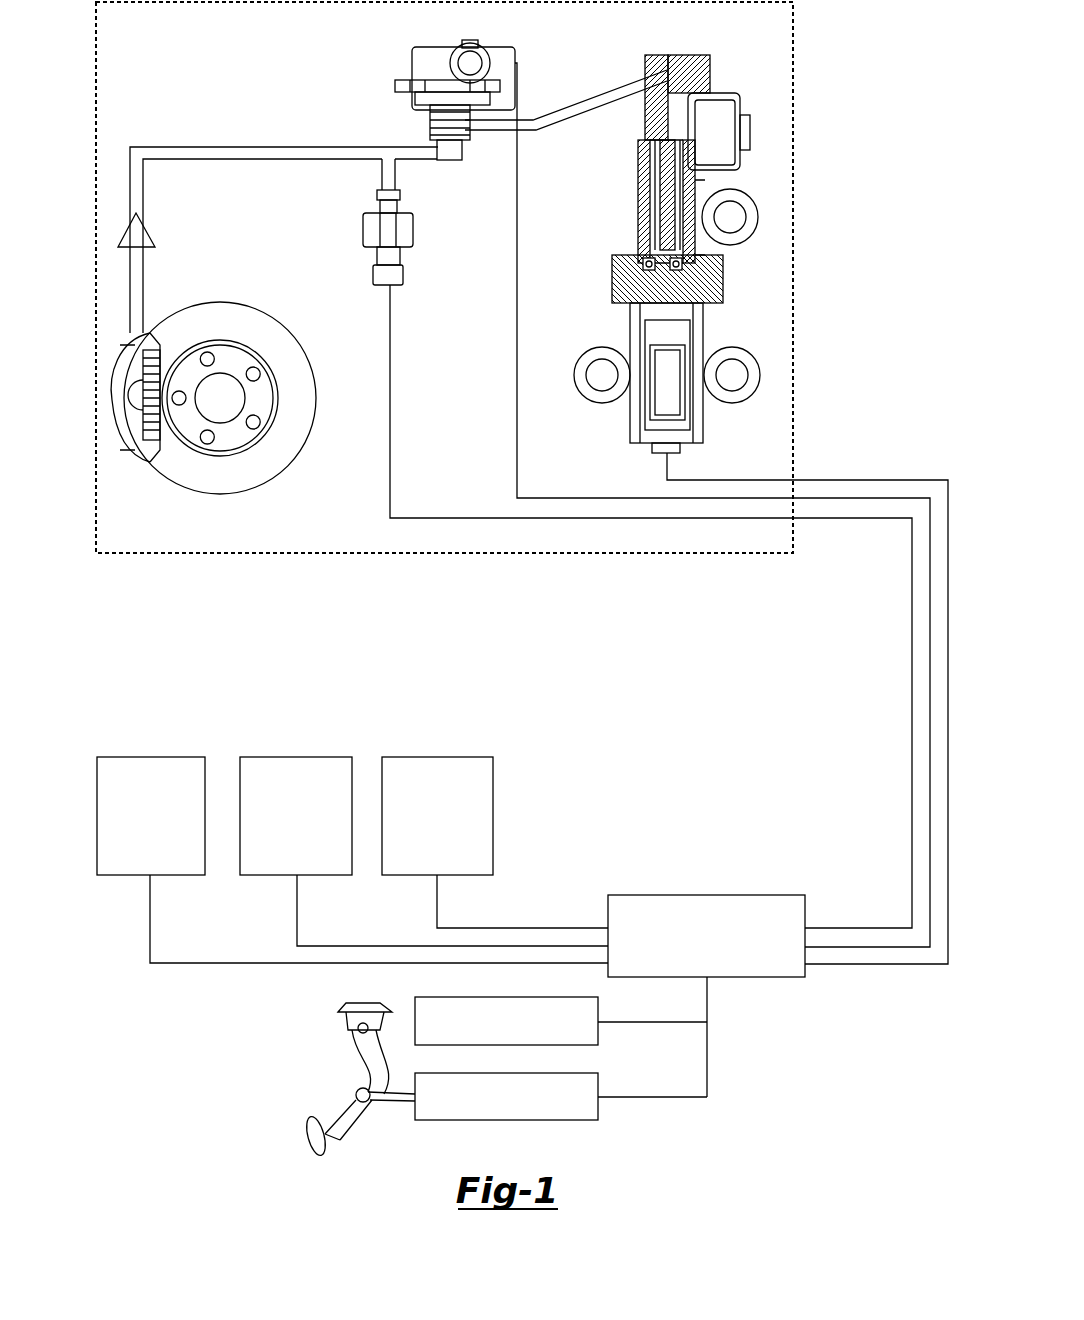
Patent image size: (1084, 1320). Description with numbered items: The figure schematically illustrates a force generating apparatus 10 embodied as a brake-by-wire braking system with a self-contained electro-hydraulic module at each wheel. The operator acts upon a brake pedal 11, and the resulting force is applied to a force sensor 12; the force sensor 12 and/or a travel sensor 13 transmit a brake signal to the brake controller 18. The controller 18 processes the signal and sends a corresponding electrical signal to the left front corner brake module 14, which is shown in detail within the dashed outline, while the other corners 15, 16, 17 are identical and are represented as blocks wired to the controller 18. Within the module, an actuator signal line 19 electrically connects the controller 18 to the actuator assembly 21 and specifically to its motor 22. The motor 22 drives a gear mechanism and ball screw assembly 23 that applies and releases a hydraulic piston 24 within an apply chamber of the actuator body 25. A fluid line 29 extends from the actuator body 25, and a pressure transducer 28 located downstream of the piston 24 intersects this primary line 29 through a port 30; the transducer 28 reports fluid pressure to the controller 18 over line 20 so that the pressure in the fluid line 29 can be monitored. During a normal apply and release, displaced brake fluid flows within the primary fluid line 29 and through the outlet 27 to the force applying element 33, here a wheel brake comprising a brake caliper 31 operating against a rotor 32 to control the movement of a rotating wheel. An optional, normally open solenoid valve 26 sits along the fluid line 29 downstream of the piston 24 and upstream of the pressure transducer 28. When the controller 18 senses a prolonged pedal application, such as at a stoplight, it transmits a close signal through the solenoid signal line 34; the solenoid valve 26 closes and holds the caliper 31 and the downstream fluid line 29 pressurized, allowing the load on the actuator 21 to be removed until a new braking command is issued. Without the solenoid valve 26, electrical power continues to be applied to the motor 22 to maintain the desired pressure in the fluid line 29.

The force generating apparatus 10 is at (805, 65).
The brake pedal 11 is at (345, 1103).
The force sensor 12 is at (598, 1110).
The travel sensor 13 is at (598, 1032).
The left front corner brake module 14 is at (786, 220).
The corner 15 is at (178, 757).
The corner 16 is at (328, 757).
The corner 17 is at (470, 757).
The brake controller 18 is at (750, 895).
The actuator signal line 19 is at (865, 480).
The line 20 is at (391, 383).
The actuator assembly 21 is at (645, 257).
The motor 22 is at (703, 408).
The ball screw assembly 23 is at (637, 215).
The hydraulic piston 24 is at (645, 136).
The actuator body 25 is at (705, 72).
The solenoid valve 26 is at (412, 47).
The outlet 27 is at (150, 228).
The pressure transducer 28 is at (363, 225).
The fluid line 29 is at (160, 147).
The port 30 is at (382, 170).
The brake caliper 31 is at (118, 440).
The rotor 32 is at (305, 358).
The force applying element 33 is at (237, 404).
The solenoid signal line 34 is at (517, 240).